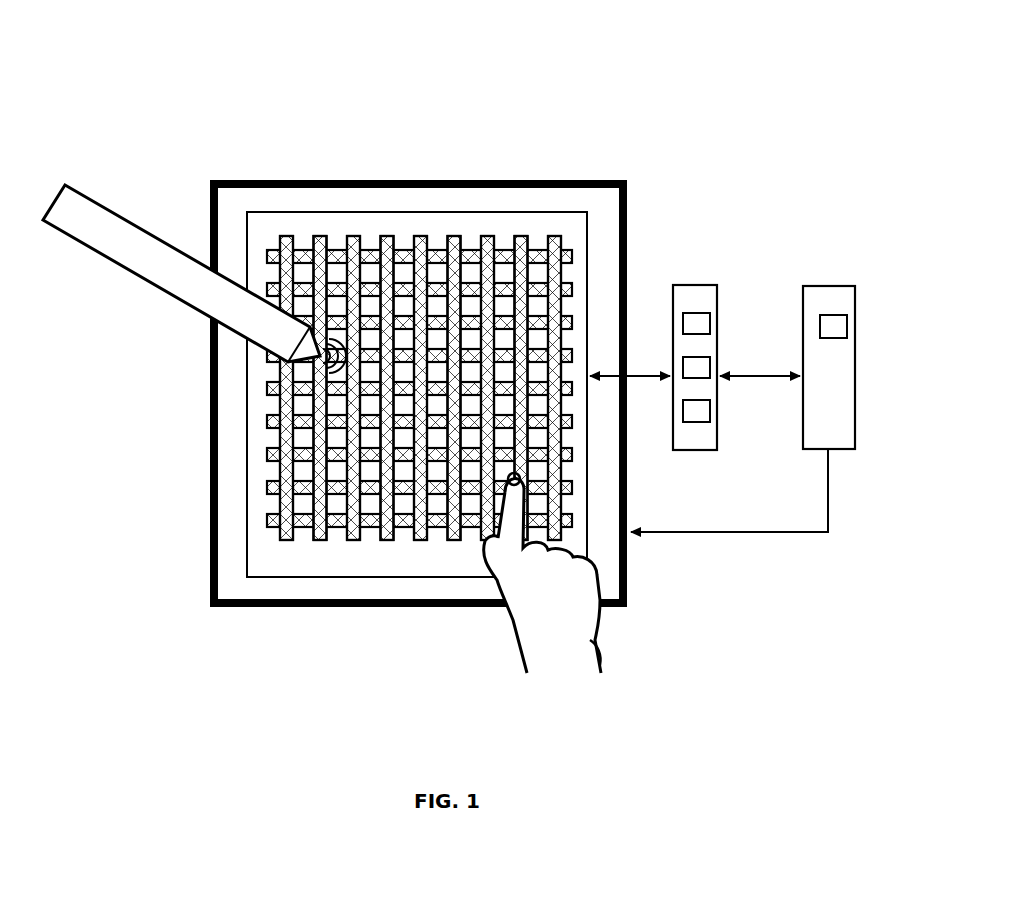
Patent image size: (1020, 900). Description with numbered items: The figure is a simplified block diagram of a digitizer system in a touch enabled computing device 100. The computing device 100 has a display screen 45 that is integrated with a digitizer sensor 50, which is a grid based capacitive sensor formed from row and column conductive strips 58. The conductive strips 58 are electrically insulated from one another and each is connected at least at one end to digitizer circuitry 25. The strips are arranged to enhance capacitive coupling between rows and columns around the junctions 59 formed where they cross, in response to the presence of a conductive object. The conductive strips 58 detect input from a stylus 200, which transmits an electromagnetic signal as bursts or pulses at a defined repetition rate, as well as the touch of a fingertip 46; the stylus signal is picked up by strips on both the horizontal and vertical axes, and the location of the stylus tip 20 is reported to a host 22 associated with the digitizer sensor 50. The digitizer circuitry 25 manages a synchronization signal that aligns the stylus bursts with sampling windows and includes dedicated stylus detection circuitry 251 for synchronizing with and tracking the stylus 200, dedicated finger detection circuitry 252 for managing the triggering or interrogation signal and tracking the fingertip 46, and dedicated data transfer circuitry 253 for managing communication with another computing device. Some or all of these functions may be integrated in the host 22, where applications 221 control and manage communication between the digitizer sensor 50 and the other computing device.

The computing device 100 is at (413, 92).
The stylus 200 is at (182, 253).
The stylus tip 20 is at (307, 355).
The conductive strips 58 is at (483, 236).
The junctions 59 is at (388, 475).
The display screen 45 is at (548, 180).
The digitizer sensor 50 is at (590, 262).
The fingertip 46 is at (508, 487).
The digitizer circuitry 25 is at (729, 326).
The stylus detection circuitry 251 is at (710, 320).
The finger detection circuitry 252 is at (710, 365).
The data transfer circuitry 253 is at (710, 408).
The host 22 is at (861, 330).
The applications 221 is at (847, 322).